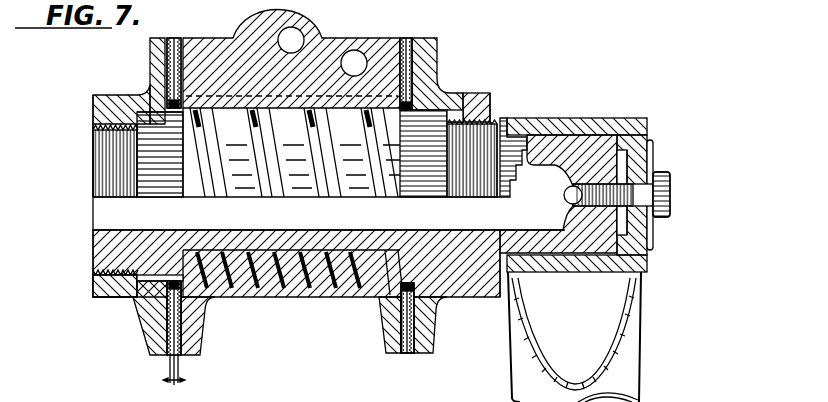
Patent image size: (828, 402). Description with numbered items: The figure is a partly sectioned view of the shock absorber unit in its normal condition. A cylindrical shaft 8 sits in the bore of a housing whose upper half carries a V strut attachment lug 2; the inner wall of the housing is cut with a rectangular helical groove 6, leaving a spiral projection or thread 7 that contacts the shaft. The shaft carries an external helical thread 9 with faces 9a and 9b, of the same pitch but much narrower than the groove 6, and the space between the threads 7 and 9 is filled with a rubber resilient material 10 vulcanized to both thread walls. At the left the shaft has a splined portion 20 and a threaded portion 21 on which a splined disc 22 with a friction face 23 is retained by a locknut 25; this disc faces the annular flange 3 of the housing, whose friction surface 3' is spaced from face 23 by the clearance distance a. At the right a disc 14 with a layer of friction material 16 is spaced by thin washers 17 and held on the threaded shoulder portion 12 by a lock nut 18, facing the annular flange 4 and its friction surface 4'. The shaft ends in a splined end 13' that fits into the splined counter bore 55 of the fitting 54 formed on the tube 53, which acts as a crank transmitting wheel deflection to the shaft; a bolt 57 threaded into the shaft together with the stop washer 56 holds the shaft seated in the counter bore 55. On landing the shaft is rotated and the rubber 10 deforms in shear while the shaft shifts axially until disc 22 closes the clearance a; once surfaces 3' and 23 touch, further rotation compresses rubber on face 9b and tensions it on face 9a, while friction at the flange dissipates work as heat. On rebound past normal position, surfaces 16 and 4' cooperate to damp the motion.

The mounting lug 2 is at (324, 30).
The locknut 25 is at (103, 96).
The thin washers 17 is at (150, 80).
The lock nut 18 is at (484, 93).
The threaded shoulder portion 12 is at (492, 107).
The threaded portion 21 is at (93, 156).
The thread face 9a is at (326, 196).
The thread face 9b is at (369, 196).
The cylindrical shaft 8 is at (477, 238).
The splined portion 20 is at (137, 300).
The splined disc 22 is at (150, 333).
The annular flange 3 is at (158, 326).
The friction surface 3' is at (184, 333).
The friction face 23 is at (166, 358).
The clearance distance a is at (181, 381).
The external helical thread 9 is at (245, 303).
The resilient material 10 is at (271, 300).
The spiral projection or thread 7 is at (315, 305).
The helical groove 6 is at (342, 305).
The annular flange 4 is at (379, 328).
The disc 14 is at (434, 350).
The friction surface 4' is at (393, 334).
The friction material 16 is at (405, 357).
The splined end 13' is at (539, 145).
The splined counter bore 55 is at (592, 134).
The fitting 54 is at (646, 133).
The stop washer 56 is at (653, 162).
The bolt 57 is at (670, 190).
The tube 53 is at (642, 360).